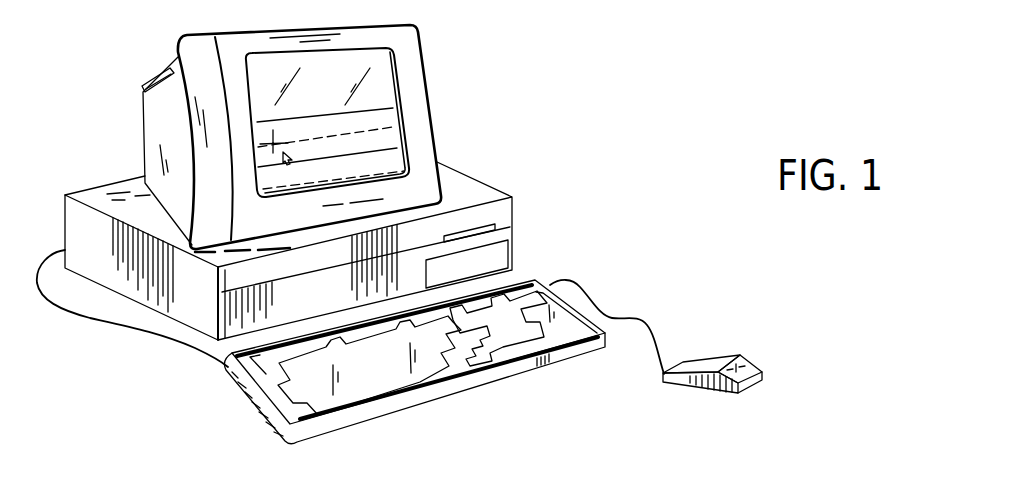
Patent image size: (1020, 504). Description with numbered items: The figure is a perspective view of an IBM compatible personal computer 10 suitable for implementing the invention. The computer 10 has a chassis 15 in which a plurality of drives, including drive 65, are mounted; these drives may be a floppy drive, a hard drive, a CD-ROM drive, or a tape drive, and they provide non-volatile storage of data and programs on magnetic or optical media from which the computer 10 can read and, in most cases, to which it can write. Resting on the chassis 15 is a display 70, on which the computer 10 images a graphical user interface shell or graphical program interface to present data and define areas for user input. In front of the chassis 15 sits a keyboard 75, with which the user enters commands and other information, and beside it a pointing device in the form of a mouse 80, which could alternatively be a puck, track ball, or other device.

The personal computer 10 is at (160, 420).
The chassis 15 is at (507, 232).
The drive 65 is at (490, 260).
The display 70 is at (437, 78).
The keyboard 75 is at (553, 363).
The mouse 80 is at (470, 233).